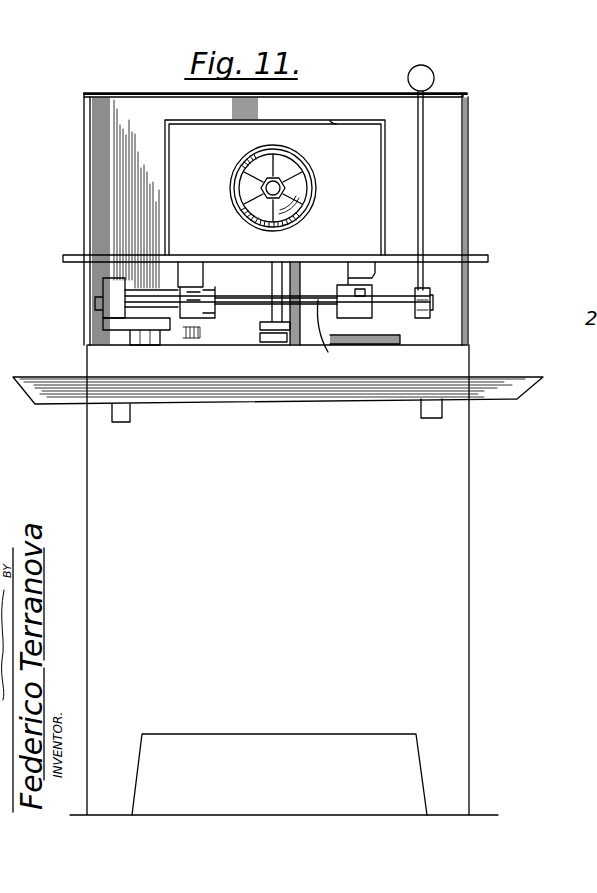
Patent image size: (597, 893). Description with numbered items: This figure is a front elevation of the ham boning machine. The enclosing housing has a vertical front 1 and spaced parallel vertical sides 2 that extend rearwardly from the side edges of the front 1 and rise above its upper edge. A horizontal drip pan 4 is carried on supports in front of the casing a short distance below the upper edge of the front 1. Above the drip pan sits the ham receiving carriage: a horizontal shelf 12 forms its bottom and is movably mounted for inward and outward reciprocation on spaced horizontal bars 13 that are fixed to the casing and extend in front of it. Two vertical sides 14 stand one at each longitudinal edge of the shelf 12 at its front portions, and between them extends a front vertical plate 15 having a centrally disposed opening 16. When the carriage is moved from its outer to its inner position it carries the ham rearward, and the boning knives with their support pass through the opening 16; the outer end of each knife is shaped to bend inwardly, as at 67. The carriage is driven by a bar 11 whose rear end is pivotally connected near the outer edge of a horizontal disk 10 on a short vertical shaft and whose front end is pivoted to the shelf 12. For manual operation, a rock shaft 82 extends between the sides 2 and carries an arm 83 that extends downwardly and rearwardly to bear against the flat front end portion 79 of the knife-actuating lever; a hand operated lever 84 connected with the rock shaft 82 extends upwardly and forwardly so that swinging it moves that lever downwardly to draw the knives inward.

The vertical front 1 is at (455, 496).
The vertical sides 2 is at (468, 226).
The drip pan 4 is at (277, 388).
The horizontal disk 10 is at (400, 338).
The bar 11 is at (292, 338).
The shelf 12 is at (345, 255).
The horizontal bars 13 is at (305, 95).
The vertical sides 14 is at (166, 160).
The front vertical plate 15 is at (330, 125).
The opening 16 is at (287, 148).
The inwardly bent outer end of knife 67 is at (294, 194).
The flat front end portion 79 is at (146, 343).
The rock shaft 82 is at (322, 336).
The arm 83 is at (124, 333).
The hand operated lever 84 is at (425, 148).